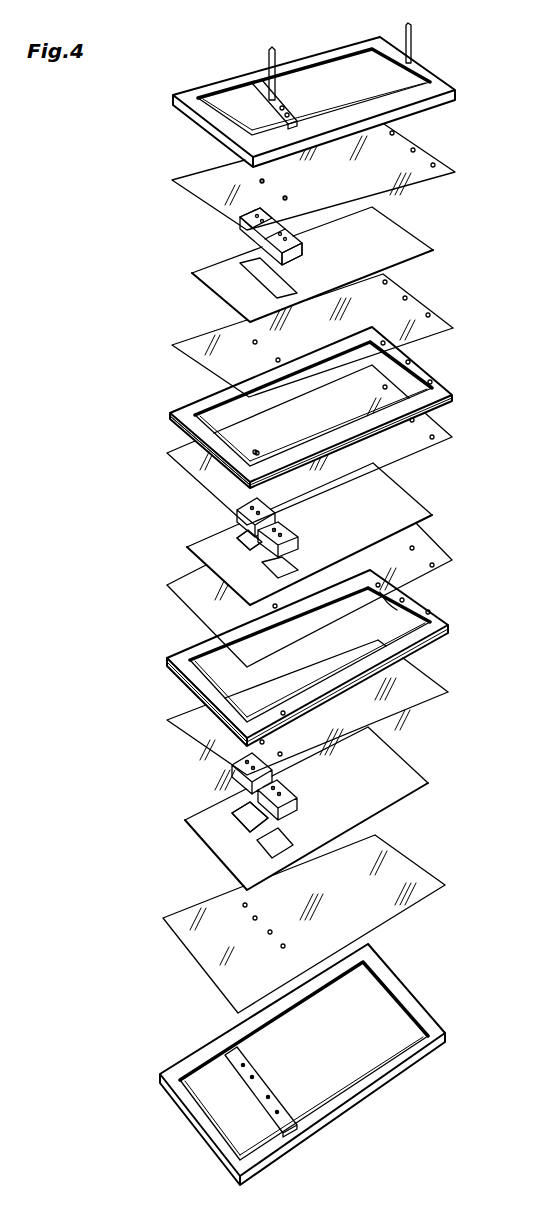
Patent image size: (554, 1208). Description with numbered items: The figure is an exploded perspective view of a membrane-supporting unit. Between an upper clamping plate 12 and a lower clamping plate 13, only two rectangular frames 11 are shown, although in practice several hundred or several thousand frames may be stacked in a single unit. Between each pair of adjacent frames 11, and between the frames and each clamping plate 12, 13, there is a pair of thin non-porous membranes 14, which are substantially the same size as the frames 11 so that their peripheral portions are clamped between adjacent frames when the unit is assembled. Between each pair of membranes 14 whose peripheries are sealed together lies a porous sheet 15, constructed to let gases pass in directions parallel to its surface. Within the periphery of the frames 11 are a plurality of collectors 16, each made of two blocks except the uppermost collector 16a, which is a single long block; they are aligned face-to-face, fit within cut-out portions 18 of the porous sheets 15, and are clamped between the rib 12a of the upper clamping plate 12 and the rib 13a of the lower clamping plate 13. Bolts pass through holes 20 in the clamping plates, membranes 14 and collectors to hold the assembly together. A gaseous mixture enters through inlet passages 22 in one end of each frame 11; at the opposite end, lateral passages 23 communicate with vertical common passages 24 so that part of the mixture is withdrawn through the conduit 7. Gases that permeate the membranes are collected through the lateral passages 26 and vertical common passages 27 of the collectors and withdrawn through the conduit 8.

The conduit 7 is at (413, 44).
The conduit 8 is at (268, 52).
The rectangular frame 11 is at (452, 392).
The upper clamping plate 12 is at (455, 88).
The rib 12a is at (283, 99).
The lower clamping plate 13 is at (420, 1008).
The rib 13a is at (268, 1090).
The non-porous membrane 14 is at (428, 157).
The porous sheet 15 is at (425, 238).
The collector 16 is at (258, 530).
The uppermost collector 16a is at (242, 218).
The cut-out portion 18 is at (238, 565).
The hole 20 is at (262, 84).
The passage 22 is at (198, 450).
The lateral passage 23 is at (398, 605).
The common passage 24 is at (432, 612).
The lateral passage 26 is at (255, 232).
The common passage 27 is at (290, 247).